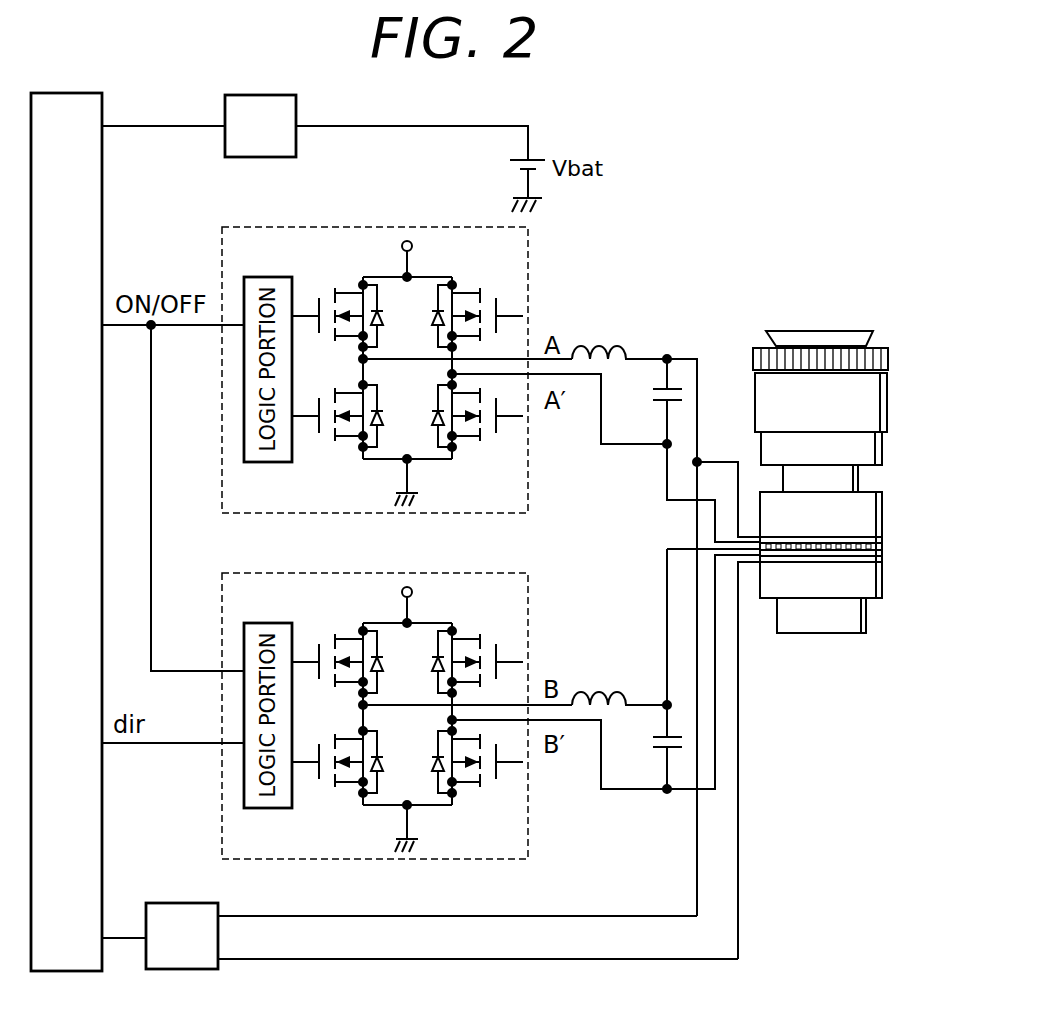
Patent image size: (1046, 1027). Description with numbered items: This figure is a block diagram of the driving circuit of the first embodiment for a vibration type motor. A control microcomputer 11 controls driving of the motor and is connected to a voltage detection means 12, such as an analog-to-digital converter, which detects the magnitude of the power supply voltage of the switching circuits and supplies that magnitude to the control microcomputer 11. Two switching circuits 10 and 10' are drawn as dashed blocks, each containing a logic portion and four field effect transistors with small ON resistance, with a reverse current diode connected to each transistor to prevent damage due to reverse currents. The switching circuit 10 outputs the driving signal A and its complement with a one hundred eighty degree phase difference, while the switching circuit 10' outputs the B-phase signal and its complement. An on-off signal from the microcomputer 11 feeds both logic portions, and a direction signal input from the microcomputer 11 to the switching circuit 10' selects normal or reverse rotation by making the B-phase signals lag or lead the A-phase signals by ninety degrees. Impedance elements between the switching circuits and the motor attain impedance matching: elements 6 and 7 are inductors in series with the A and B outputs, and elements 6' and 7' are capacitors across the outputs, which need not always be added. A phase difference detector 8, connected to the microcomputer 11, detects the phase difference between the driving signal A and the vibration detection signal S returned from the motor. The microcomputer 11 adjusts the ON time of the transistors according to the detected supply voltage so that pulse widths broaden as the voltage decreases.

The control microcomputer 11 is at (70, 94).
The voltage detection means 12 is at (262, 97).
The switching circuit 10 is at (375, 347).
The switching circuit 10' is at (375, 694).
The inductor 6 is at (600, 330).
The capacitor 6' is at (685, 448).
The inductor 7 is at (600, 674).
The capacitor 7' is at (685, 671).
The phase difference detector 8 is at (187, 903).